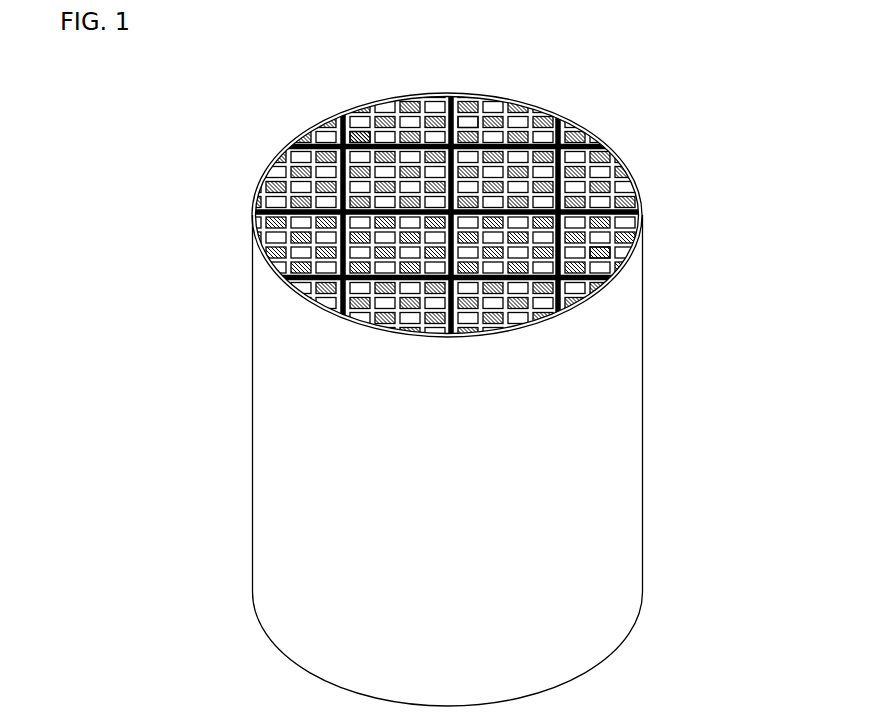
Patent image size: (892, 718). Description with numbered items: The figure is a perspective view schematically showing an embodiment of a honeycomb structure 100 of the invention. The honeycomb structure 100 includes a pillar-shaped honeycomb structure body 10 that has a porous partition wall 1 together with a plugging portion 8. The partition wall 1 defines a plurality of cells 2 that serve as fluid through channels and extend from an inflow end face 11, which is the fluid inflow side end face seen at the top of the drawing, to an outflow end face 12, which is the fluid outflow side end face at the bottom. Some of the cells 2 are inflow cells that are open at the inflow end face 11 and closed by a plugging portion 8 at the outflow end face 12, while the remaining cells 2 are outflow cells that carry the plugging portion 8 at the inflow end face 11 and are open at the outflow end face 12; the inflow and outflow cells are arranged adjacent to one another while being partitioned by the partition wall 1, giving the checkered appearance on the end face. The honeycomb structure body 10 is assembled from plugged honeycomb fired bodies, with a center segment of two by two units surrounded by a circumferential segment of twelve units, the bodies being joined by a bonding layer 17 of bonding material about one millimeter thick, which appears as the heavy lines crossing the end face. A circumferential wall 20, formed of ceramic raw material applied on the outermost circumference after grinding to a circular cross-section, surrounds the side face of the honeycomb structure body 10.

The honeycomb structure 100 is at (735, 57).
The partition wall 1 is at (397, 110).
The cells 2 is at (468, 118).
The plugging portion 8 is at (358, 132).
The honeycomb structure body 10 is at (380, 175).
The inflow end face 11 is at (523, 99).
The outflow end face 12 is at (533, 693).
The bonding layer 17 is at (640, 209).
The circumferential wall 20 is at (617, 450).